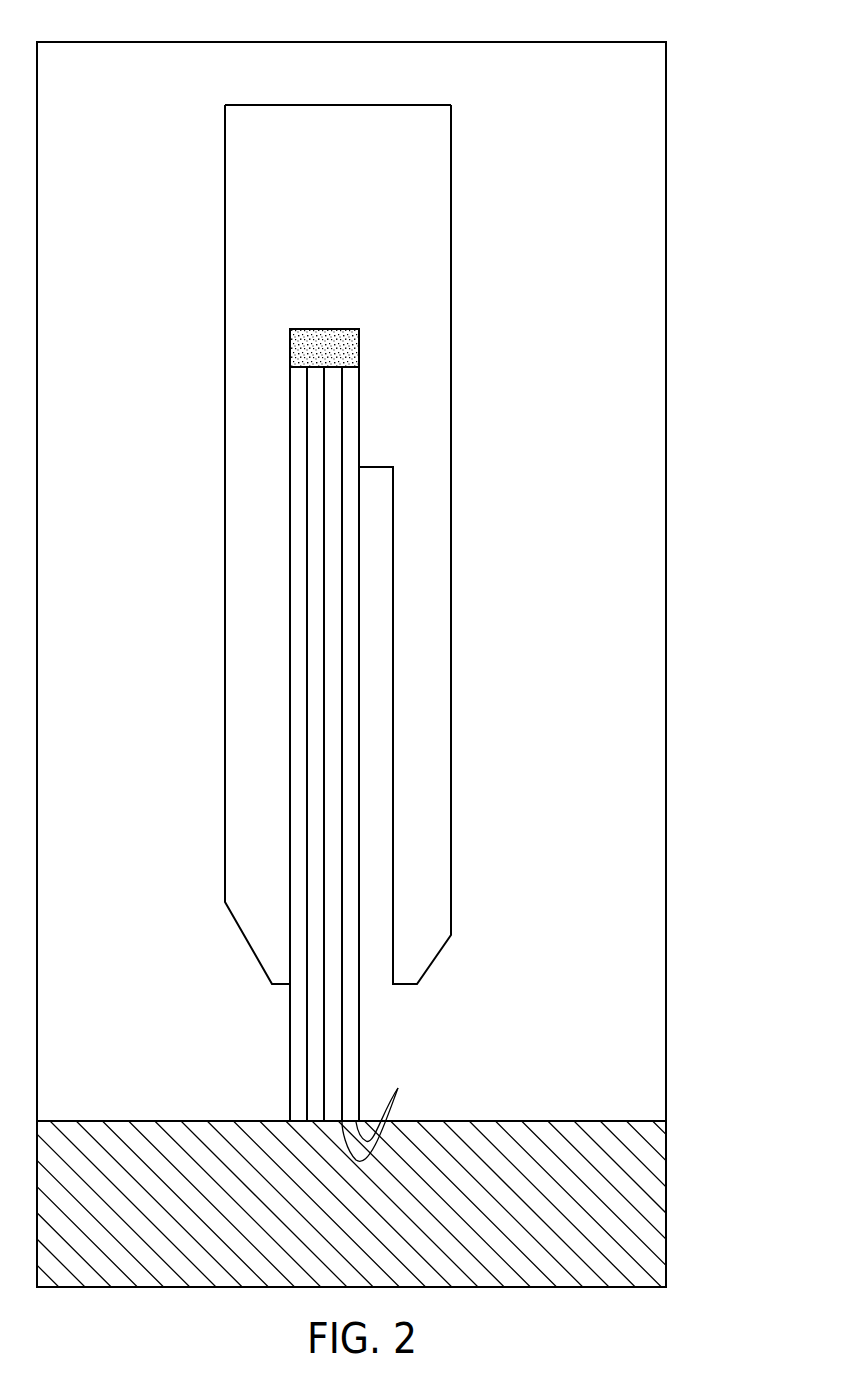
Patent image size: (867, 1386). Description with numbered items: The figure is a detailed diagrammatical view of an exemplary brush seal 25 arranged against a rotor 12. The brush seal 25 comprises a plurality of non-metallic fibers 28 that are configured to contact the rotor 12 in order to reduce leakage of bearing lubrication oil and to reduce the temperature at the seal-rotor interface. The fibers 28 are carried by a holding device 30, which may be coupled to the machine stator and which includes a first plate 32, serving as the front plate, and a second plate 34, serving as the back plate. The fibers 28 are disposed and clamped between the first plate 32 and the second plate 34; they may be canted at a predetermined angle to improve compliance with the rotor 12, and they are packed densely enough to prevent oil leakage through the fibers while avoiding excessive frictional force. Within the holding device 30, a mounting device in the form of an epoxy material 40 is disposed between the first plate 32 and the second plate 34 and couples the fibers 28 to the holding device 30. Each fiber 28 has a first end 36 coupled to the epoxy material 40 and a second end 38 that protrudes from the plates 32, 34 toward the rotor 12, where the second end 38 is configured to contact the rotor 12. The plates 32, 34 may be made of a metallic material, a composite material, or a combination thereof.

The rotor 12 is at (660, 1198).
The brush seal 25 is at (140, 98).
The non-metallic fibers 28 is at (358, 735).
The holding device 30 is at (352, 544).
The first plate 32 is at (440, 476).
The second plate 34 is at (240, 322).
The first end 36 is at (359, 350).
The second end 38 is at (379, 1110).
The epoxy material 40 is at (359, 333).